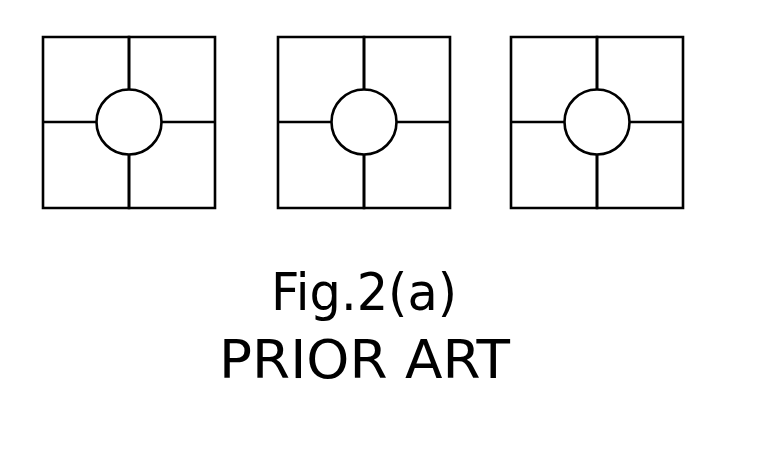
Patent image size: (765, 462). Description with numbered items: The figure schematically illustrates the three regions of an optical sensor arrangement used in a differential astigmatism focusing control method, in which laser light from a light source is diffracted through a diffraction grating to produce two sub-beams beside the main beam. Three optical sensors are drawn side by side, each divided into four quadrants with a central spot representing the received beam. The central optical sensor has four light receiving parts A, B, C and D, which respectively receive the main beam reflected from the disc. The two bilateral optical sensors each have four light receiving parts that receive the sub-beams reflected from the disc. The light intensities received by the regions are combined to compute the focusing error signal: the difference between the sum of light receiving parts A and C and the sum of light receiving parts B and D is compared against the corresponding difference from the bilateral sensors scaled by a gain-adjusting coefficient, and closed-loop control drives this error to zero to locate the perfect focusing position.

The light receiving part A is at (321, 79).
The light receiving part B is at (407, 79).
The light receiving part C is at (407, 165).
The light receiving part D is at (321, 165).